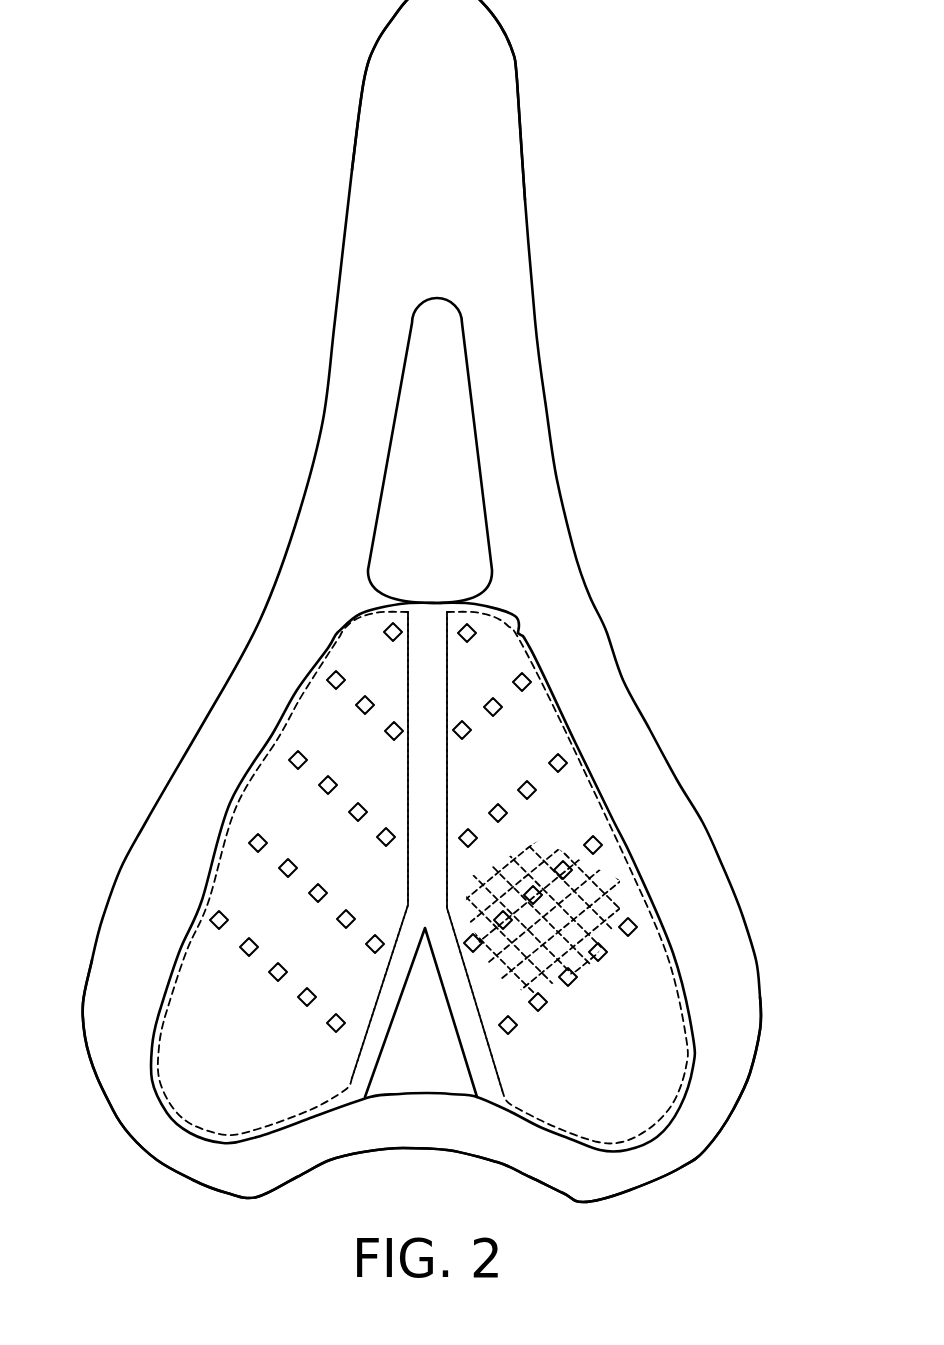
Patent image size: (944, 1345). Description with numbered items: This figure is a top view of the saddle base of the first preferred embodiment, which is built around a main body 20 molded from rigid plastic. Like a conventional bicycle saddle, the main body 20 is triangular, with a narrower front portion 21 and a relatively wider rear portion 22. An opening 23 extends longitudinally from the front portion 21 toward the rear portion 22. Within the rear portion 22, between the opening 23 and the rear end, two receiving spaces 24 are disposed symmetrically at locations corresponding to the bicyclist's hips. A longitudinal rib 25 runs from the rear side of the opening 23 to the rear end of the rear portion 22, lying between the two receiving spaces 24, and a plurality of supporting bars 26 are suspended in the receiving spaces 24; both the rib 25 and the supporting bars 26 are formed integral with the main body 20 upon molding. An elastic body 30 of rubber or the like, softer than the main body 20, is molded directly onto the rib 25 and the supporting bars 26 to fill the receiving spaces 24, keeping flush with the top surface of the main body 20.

The main body 20 is at (283, 552).
The front portion 21 is at (357, 124).
The rear portion 22 is at (130, 1137).
The opening 23 is at (460, 426).
The receiving spaces 24 is at (217, 862).
The longitudinal rib 25 is at (433, 797).
The supporting bars 26 is at (500, 905).
The elastic body 30 is at (290, 797).